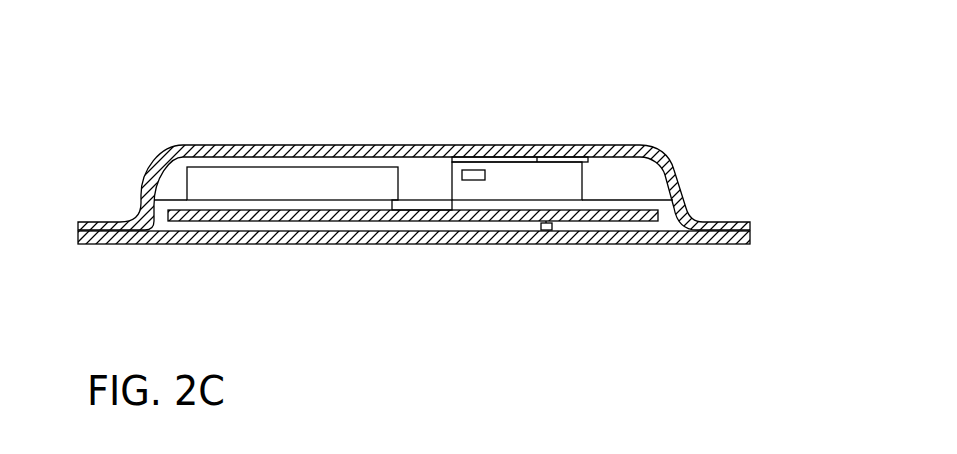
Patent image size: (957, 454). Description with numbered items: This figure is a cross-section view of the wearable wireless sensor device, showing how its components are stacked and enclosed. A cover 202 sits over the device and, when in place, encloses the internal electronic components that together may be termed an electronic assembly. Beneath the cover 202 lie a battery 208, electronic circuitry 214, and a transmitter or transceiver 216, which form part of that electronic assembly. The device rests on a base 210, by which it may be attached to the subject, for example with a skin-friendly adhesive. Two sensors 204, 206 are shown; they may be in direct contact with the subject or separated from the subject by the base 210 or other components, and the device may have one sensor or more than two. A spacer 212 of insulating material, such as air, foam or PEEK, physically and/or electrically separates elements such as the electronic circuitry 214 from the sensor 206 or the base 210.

The cover 202 is at (363, 142).
The sensor 204 is at (556, 152).
The sensor 206 is at (548, 233).
The battery 208 is at (232, 182).
The base 210 is at (205, 246).
The spacer 212 is at (442, 224).
The electronic circuitry 214 is at (561, 189).
The transmitter or transceiver 216 is at (474, 168).